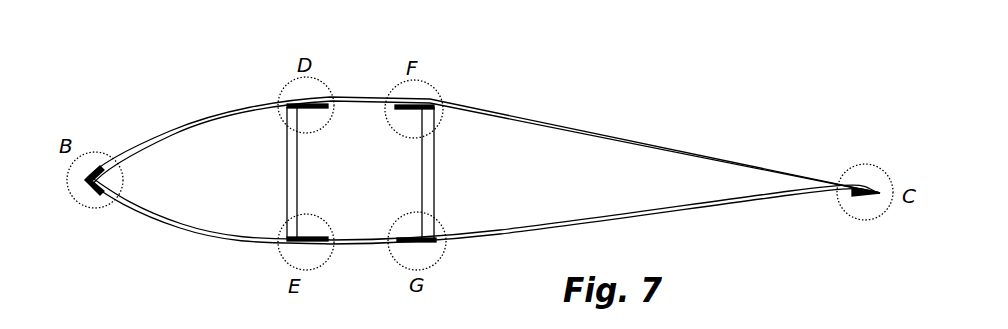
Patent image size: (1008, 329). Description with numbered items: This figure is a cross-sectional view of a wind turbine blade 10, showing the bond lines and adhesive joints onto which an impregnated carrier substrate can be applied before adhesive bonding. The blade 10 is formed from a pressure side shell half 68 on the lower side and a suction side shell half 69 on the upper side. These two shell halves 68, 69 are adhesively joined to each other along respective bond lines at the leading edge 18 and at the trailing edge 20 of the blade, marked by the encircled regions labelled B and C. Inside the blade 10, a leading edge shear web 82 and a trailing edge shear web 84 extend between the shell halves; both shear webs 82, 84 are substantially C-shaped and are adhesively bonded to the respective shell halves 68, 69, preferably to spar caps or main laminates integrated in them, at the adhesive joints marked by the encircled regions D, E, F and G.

The blade 10 is at (465, 165).
The leading edge 18 is at (87, 180).
The trailing edge 20 is at (875, 188).
The pressure side shell half 68 is at (200, 238).
The suction side shell half 69 is at (198, 122).
The leading edge shear web 82 is at (287, 154).
The trailing edge shear web 84 is at (434, 182).